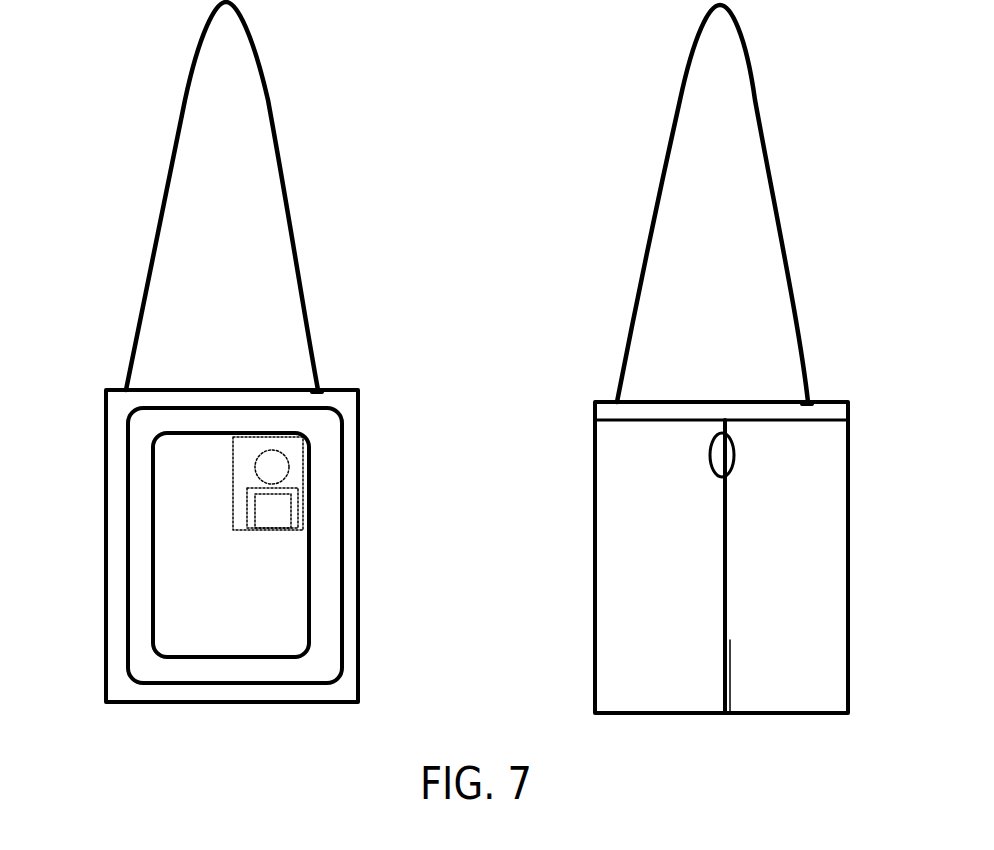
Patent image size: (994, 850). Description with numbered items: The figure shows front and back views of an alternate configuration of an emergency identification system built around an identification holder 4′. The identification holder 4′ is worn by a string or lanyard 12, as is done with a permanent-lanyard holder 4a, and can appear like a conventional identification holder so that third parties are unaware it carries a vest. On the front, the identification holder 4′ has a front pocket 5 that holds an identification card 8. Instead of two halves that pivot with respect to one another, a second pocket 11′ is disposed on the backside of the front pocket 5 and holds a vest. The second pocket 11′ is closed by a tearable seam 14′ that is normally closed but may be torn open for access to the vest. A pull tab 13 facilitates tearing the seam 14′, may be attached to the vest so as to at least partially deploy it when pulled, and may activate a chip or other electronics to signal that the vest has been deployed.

The lanyard 12 is at (133, 345).
The identification holder 4a is at (340, 389).
The identification holder 4′ is at (113, 483).
The identification card 8 is at (245, 567).
The front pocket 5 is at (292, 575).
The pull tab 13 is at (735, 455).
The second pocket 11′ is at (840, 543).
The tearable seam 14′ is at (727, 602).